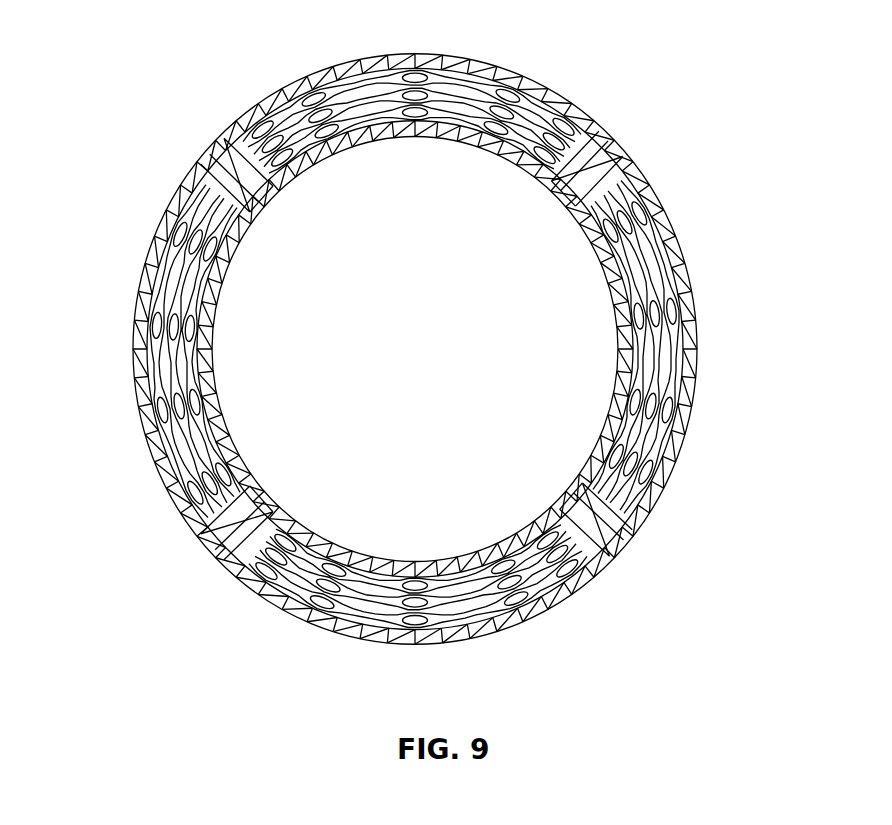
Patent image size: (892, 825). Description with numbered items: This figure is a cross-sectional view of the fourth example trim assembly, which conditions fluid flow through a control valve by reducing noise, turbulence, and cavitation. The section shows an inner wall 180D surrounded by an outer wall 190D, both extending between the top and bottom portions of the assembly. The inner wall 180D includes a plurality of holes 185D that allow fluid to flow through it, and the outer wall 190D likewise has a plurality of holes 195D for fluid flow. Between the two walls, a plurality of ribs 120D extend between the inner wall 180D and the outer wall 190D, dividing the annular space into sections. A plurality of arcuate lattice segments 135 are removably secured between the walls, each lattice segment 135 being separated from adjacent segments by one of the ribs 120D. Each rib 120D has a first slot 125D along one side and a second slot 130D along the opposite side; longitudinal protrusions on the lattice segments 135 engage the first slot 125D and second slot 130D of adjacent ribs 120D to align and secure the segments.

The rib 120D is at (240, 196).
The first slot 125D is at (237, 160).
The second slot 130D is at (213, 198).
The arcuate lattice segment 135 is at (376, 86).
The inner wall 180D is at (368, 135).
The holes 185D is at (311, 158).
The outer wall 190D is at (690, 380).
The holes 195D is at (698, 340).